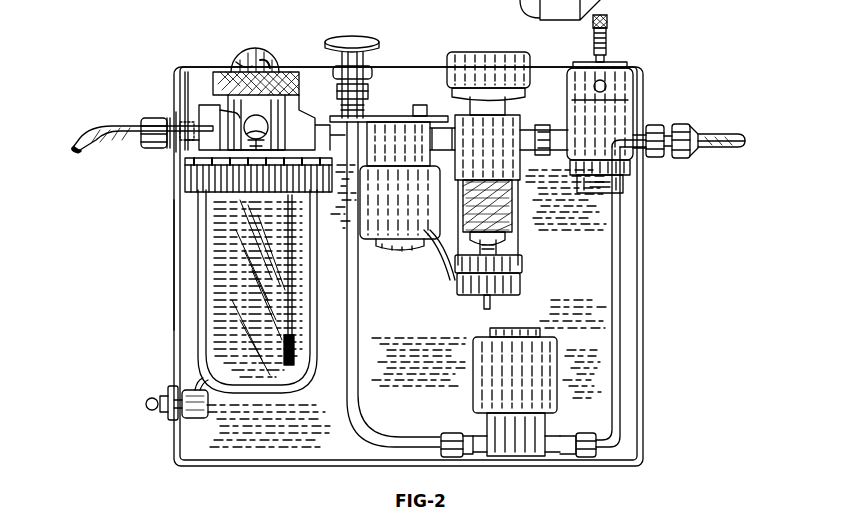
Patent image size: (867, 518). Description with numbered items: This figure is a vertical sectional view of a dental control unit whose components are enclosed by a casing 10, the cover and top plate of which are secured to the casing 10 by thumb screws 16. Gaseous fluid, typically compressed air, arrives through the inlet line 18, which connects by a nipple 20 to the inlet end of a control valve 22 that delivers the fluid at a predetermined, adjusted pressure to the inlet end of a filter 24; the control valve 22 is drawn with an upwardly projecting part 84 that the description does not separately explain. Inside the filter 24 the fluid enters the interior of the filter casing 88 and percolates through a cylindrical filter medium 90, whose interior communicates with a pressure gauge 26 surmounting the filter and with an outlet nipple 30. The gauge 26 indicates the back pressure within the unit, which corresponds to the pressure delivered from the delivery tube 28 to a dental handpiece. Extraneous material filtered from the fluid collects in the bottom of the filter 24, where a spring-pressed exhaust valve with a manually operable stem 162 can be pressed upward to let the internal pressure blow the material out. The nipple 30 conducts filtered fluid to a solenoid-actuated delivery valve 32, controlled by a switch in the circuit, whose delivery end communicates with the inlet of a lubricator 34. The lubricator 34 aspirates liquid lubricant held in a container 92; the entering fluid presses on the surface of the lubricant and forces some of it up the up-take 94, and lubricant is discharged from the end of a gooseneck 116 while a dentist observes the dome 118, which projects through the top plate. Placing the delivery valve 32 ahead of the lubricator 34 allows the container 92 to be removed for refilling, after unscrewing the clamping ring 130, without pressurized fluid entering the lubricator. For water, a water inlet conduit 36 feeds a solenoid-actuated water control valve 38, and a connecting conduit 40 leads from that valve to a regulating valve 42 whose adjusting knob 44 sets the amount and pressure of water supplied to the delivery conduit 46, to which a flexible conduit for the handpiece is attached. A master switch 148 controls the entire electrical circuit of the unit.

The casing 10 is at (168, 286).
The thumb screws 16 is at (525, 8).
The inlet line 18 is at (712, 132).
The nipple 20 is at (660, 124).
The control valve 22 is at (628, 62).
The filter 24 is at (512, 205).
The pressure gauge 26 is at (492, 52).
The delivery tube 28 is at (100, 130).
The nipple 30 is at (440, 118).
The solenoid-actuated delivery valve 32 is at (410, 250).
The lubricator 34 is at (300, 115).
The water inlet conduit 36 is at (617, 277).
The solenoid-actuated water control valve 38 is at (544, 332).
The connecting conduit 40 is at (360, 328).
The regulating valve 42 is at (338, 200).
The adjusting knob 44 is at (358, 38).
The delivery conduit 46 is at (212, 118).
The filter stem 84 is at (606, 24).
The casing 88 is at (522, 280).
The cylindrical filter medium 90 is at (520, 250).
The container 92 is at (292, 350).
The up-take 94 is at (288, 212).
The gooseneck 116 is at (270, 58).
The dome 118 is at (242, 58).
The clamping ring 130 is at (185, 185).
The master switch 148 is at (197, 418).
The stem 162 is at (490, 305).